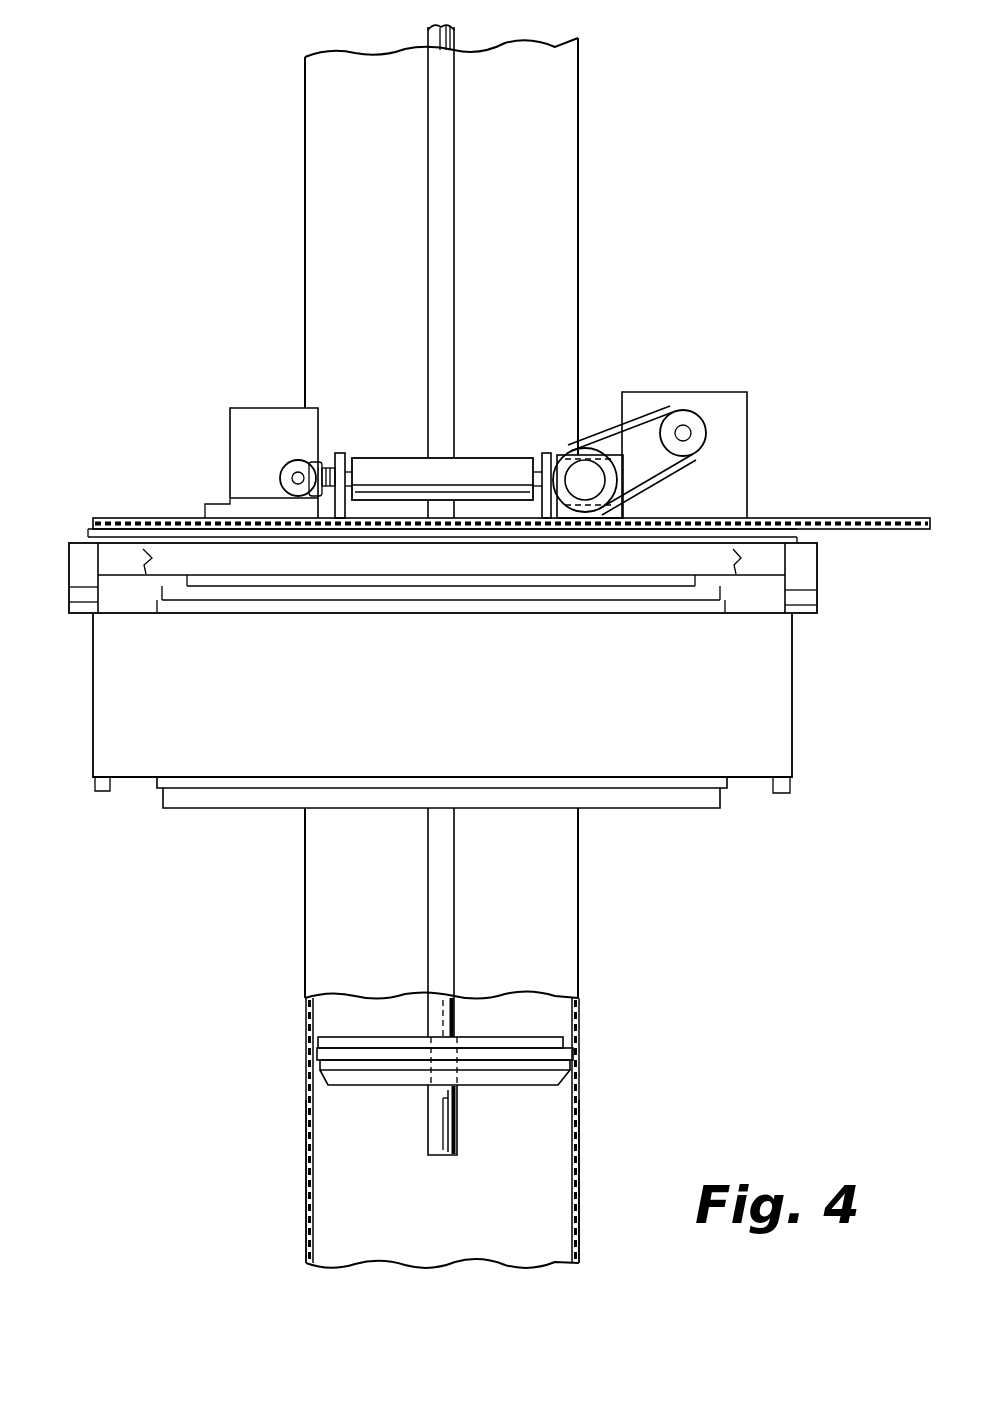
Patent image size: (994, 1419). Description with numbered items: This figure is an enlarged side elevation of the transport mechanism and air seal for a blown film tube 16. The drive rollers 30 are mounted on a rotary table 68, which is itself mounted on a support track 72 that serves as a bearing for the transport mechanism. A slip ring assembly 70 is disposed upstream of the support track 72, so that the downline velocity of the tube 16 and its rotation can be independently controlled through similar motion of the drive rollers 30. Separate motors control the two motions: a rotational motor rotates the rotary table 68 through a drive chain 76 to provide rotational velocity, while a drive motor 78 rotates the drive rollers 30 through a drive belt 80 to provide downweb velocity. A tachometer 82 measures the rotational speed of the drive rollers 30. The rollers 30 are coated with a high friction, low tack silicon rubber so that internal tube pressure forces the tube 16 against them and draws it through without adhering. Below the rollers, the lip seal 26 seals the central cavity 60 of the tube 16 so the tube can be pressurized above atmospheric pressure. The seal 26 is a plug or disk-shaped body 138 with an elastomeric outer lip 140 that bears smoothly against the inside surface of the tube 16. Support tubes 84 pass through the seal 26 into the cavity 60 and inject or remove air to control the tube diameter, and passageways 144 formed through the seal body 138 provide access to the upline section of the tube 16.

The tube 16 is at (572, 148).
The lip seal 26 is at (320, 1043).
The drive rollers 30 is at (355, 460).
The central cavity 60 is at (430, 1245).
The rotary table 68 is at (90, 527).
The slip ring assembly 70 is at (783, 685).
The support track 72 is at (808, 573).
The drive chain 76 is at (846, 518).
The drive motor 78 is at (733, 407).
The drive belt 80 is at (638, 430).
The tachometer 82 is at (242, 425).
The support tubes 84 is at (432, 1128).
The seal body 138 is at (548, 1077).
The outer lip 140 is at (568, 1058).
The passageways 144 is at (456, 1106).